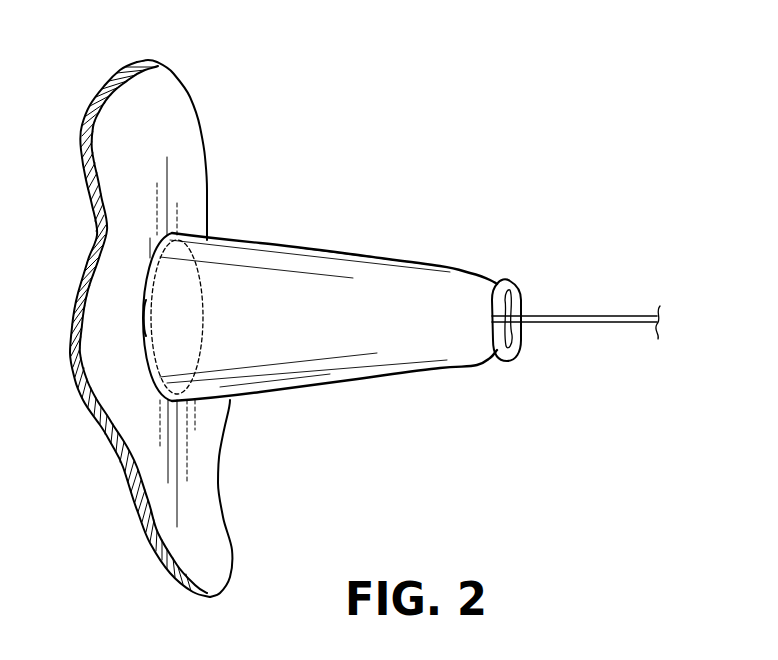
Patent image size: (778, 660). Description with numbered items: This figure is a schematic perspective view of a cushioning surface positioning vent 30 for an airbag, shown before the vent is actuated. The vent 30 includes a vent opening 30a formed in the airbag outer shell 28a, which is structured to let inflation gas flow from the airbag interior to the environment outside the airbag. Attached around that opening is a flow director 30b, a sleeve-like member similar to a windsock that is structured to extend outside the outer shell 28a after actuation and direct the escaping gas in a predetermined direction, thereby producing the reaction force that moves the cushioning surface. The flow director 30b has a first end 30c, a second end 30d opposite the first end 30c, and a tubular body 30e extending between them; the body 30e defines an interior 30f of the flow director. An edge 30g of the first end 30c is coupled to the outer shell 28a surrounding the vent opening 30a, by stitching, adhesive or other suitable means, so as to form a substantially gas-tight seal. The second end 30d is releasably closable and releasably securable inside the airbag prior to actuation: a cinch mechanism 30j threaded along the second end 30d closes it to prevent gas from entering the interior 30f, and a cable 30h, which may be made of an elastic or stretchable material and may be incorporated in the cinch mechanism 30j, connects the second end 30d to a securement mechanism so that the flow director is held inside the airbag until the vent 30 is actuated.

The airbag outer shell 28a is at (167, 133).
The cushioning surface positioning vent 30 is at (336, 229).
The vent opening 30a is at (205, 279).
The flow director 30b is at (303, 366).
The first end 30c is at (198, 395).
The second end 30d is at (480, 284).
The tubular body 30e is at (384, 290).
The interior 30f is at (453, 342).
The edge 30g is at (143, 287).
The cable 30h is at (603, 318).
The cinch mechanism 30j is at (521, 292).